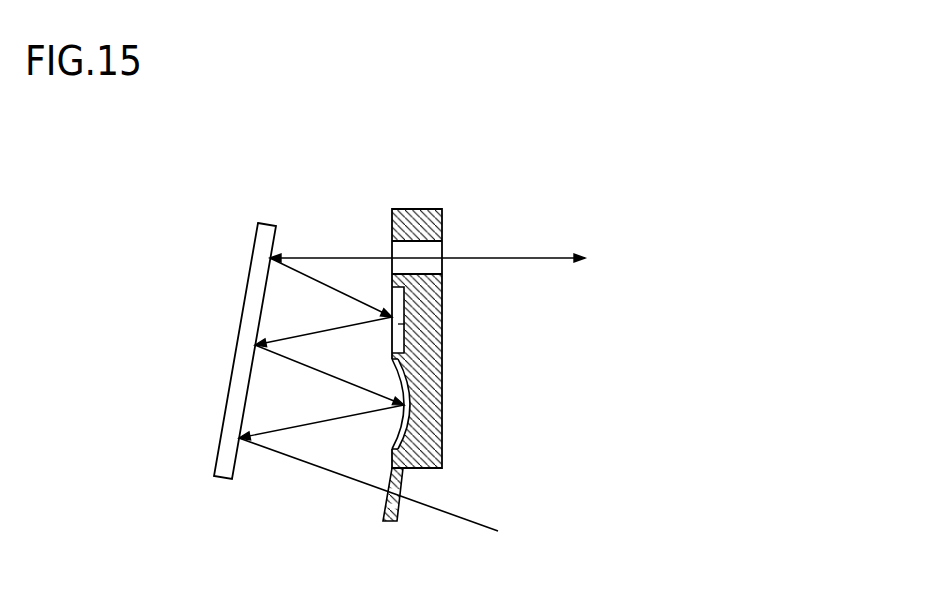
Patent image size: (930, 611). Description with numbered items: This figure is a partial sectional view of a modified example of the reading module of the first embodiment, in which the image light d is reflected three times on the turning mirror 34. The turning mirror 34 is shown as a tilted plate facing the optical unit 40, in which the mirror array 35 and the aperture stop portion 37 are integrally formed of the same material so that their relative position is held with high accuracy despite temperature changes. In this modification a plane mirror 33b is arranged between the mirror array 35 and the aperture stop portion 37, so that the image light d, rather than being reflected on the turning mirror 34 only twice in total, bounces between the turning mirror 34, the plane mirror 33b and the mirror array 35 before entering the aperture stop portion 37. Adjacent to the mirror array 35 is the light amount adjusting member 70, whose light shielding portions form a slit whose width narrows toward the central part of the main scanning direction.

The optical unit 40 is at (418, 210).
The aperture stop portion 37 is at (437, 266).
The plane mirror 33b is at (405, 324).
The mirror array 35 is at (392, 448).
The turning mirror 34 is at (234, 364).
The light amount adjusting member 70 is at (398, 515).
The image light d is at (476, 523).